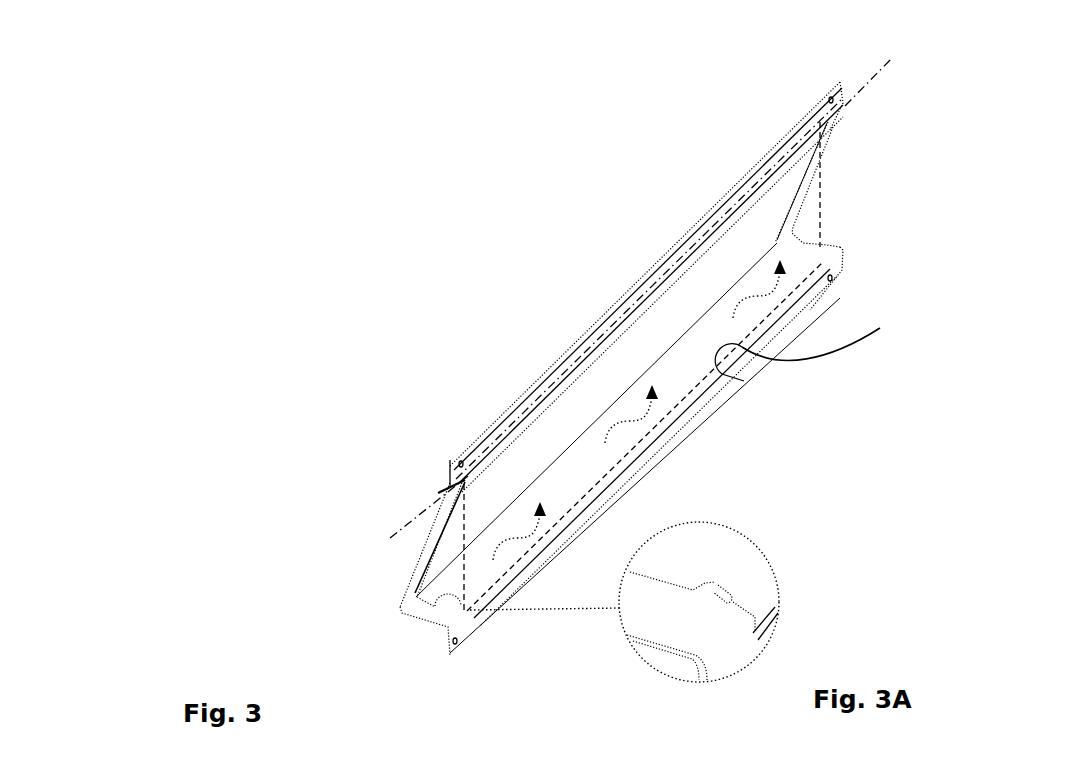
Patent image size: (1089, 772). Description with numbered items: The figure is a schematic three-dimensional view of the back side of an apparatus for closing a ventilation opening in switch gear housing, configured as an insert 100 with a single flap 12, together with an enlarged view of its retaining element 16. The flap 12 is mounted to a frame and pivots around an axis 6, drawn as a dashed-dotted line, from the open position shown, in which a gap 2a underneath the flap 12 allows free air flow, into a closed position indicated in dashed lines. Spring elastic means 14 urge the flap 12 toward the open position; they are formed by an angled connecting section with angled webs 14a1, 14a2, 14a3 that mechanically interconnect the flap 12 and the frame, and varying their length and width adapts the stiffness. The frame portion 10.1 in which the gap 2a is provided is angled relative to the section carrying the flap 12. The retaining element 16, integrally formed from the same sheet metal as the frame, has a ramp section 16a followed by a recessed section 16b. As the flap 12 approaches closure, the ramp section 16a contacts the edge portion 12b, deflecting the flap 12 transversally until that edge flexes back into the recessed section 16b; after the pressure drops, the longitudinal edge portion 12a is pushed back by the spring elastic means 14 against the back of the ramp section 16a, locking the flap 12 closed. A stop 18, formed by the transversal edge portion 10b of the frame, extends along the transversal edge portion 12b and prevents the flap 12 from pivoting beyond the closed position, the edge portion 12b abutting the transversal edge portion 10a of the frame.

In FIG. 3, the axis 6 is at (277, 207).
In FIG. 3, the spring elastic means 14 is at (750, 205).
In FIG. 3, the angled web 14a1 is at (560, 380).
In FIG. 3, the angled web 14a2 is at (647, 293).
In FIG. 3, the angled web 14a3 is at (735, 211).
In FIG. 3, the gap 2a is at (670, 363).
In FIG. 3, the frame portion 10.1 is at (580, 465).
In FIG. 3, the insert 100 is at (458, 440).
In FIG. 3, the transversal edge portion of the frame 10a is at (463, 576).
In FIG. 3, the transversal edge portion of the frame 10b is at (747, 362).
In FIG. 3, the flap 12 is at (732, 252).
In FIG. 3A, the longitudinal edge portion of the flap 12a is at (665, 583).
In FIG. 3, the edge portion of the flap 12b is at (735, 372).
In FIG. 3, the retaining element 16 is at (823, 258).
In FIG. 3A, the retaining element 16 is at (720, 585).
In FIG. 3A, the ramp section 16a is at (707, 583).
In FIG. 3A, the recessed section 16b is at (737, 598).
In FIG. 3, the stop 18 is at (828, 326).